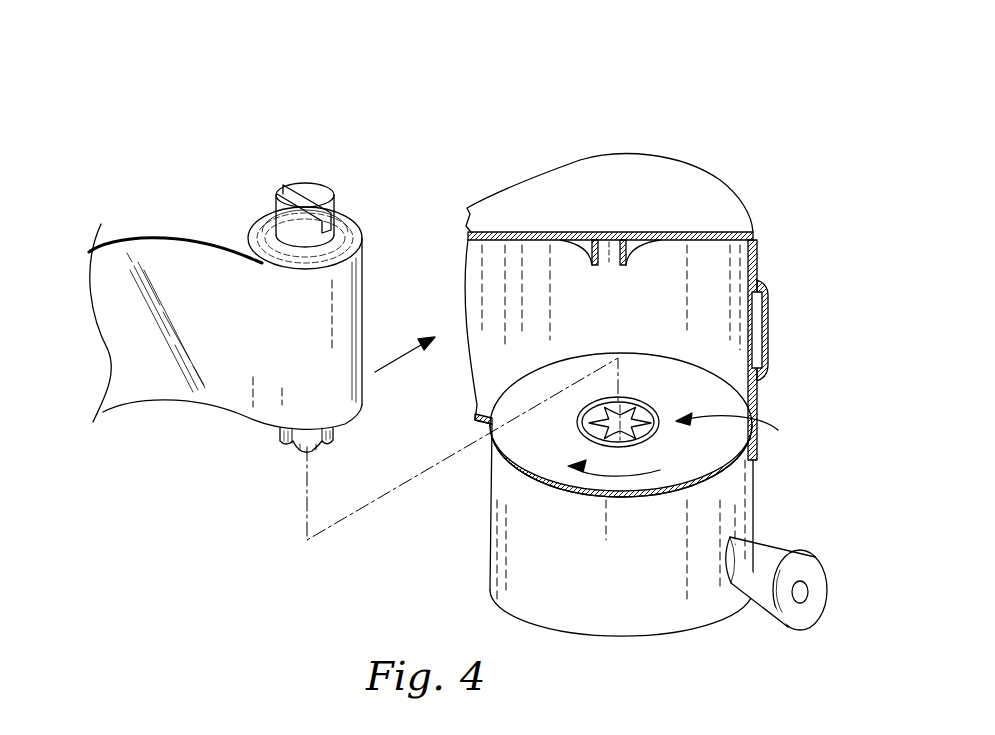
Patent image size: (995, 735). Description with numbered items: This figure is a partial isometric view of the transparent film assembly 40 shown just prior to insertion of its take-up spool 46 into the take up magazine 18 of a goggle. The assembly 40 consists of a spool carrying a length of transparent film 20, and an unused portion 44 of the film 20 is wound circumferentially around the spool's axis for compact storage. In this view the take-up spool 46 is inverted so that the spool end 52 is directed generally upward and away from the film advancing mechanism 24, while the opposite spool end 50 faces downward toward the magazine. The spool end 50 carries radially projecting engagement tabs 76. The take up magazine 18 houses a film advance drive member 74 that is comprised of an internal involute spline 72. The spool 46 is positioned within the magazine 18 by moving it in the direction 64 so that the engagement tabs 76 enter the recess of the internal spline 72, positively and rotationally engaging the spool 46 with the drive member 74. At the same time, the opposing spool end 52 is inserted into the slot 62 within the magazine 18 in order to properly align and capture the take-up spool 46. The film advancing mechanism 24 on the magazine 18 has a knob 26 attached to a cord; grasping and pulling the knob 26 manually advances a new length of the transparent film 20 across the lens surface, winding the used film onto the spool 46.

The take up magazine 18 is at (776, 203).
The transparent film 20 is at (155, 383).
The film advancing mechanism 24 is at (655, 612).
The knob 26 is at (787, 552).
The transparent film assembly 40 is at (122, 172).
The unused portion 44 is at (293, 383).
The take-up spool 46 is at (299, 166).
The spool end 50 is at (300, 450).
The spool end 52 is at (279, 225).
The slot 62 is at (612, 257).
The direction 64 is at (398, 360).
The internal involute spline 72 is at (643, 412).
The film advance drive member 74 is at (748, 423).
The engagement tabs 76 is at (290, 444).